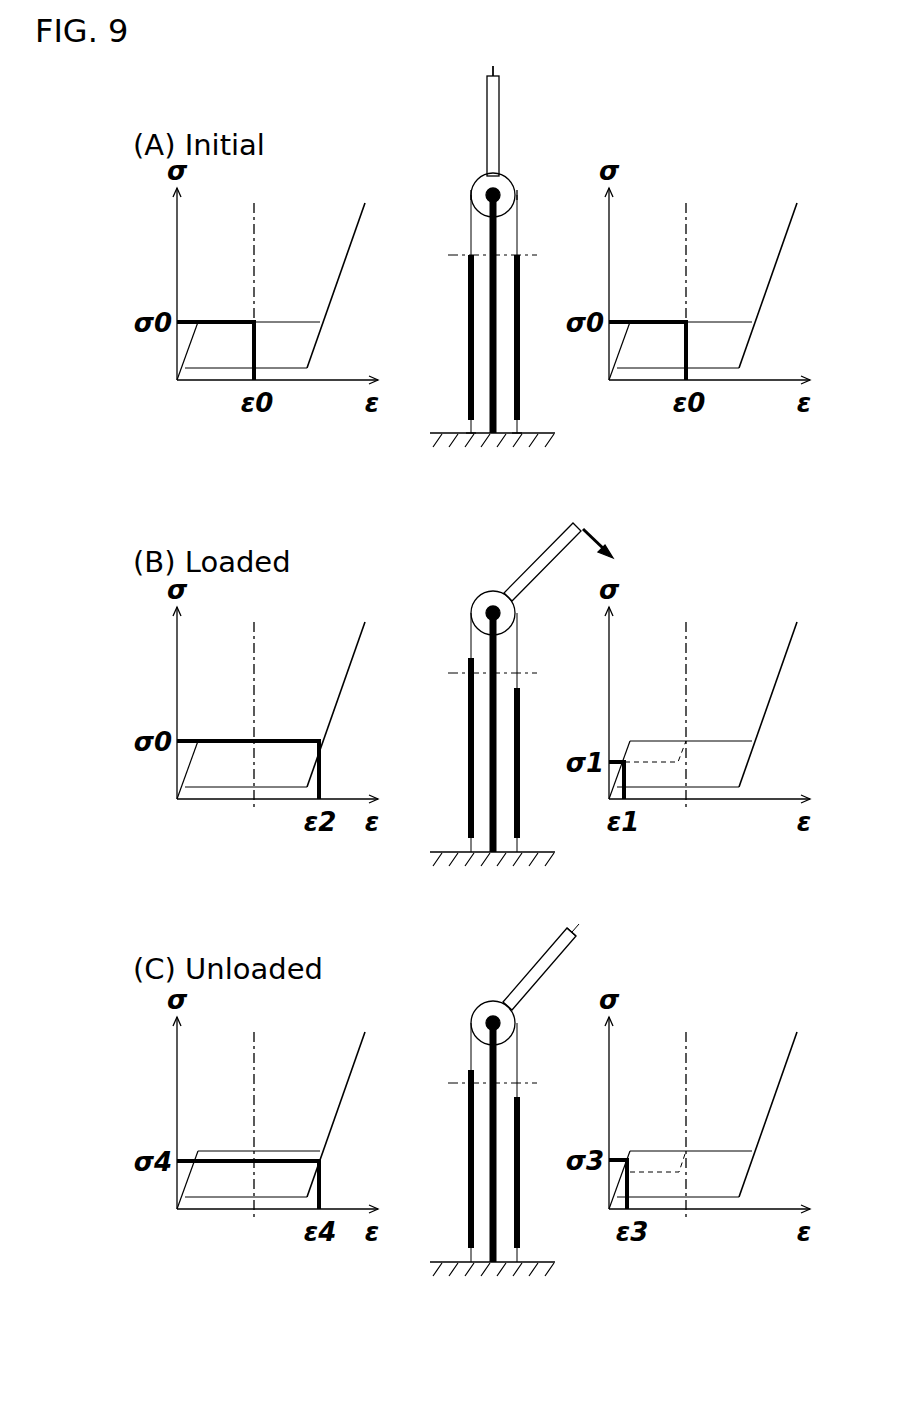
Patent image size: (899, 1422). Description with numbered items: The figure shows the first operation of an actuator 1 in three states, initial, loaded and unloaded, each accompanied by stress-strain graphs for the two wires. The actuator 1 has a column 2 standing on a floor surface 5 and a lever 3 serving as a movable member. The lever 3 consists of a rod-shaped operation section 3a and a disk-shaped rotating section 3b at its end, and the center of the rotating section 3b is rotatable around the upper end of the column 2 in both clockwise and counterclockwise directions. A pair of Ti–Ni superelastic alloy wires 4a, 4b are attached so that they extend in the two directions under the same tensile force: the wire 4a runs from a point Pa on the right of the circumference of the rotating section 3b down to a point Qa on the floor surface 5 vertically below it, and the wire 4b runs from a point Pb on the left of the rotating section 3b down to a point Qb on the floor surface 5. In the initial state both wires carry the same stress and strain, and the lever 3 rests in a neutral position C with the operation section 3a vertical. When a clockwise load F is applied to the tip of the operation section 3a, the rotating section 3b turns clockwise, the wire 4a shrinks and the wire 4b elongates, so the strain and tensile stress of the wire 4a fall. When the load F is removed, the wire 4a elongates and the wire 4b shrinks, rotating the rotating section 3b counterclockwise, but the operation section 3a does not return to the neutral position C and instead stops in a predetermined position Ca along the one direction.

The actuator 1 is at (409, 119).
The column 2 is at (497, 232).
The lever 3 is at (550, 98).
The operation section 3a is at (499, 123).
The rotating section 3b is at (500, 178).
The wire 4a is at (519, 307).
The wire 4b is at (469, 336).
The floor surface 5 is at (548, 437).
The neutral position C is at (495, 72).
The predetermined position Ca is at (580, 928).
The point Pa is at (516, 193).
The point Pb is at (470, 196).
The point Qa is at (517, 433).
The point Qb is at (471, 433).
The load F is at (608, 543).